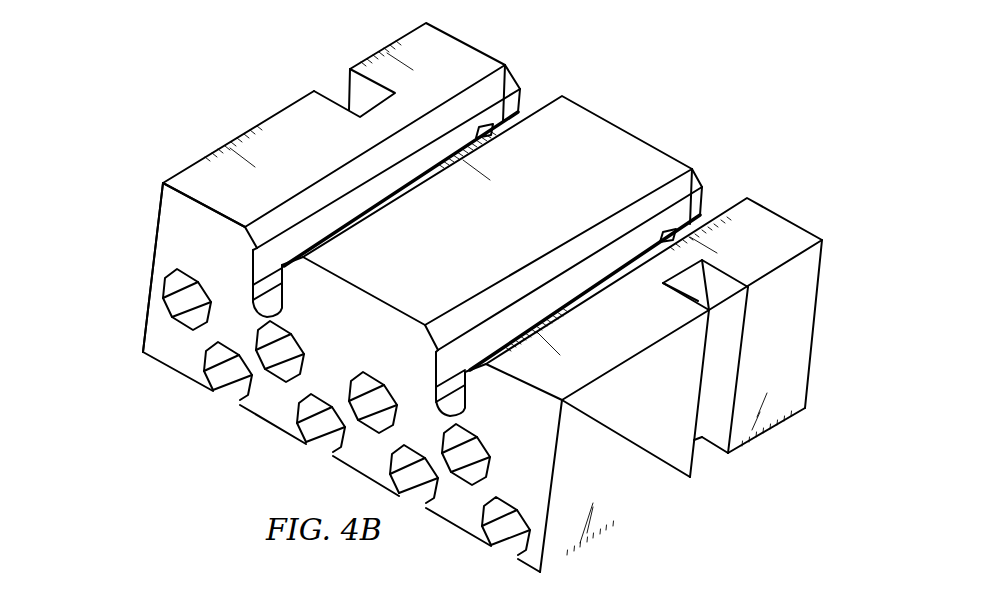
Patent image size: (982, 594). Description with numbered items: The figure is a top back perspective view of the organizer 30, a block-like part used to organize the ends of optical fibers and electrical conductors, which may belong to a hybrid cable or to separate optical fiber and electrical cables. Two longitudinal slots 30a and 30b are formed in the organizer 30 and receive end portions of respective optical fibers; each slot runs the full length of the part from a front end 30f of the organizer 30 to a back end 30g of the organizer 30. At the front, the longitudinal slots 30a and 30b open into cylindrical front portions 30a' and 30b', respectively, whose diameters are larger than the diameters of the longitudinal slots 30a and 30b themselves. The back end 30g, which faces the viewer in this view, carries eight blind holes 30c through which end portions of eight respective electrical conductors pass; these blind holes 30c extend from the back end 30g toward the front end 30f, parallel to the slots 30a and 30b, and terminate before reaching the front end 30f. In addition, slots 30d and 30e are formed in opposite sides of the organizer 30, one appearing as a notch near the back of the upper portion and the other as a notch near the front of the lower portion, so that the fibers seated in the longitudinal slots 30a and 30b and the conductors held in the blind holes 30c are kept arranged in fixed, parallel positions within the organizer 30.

The organizer 30 is at (703, 79).
The longitudinal slot 30a is at (385, 214).
The cylindrical front portion 30a' is at (532, 97).
The longitudinal slot 30b is at (568, 315).
The cylindrical front portion 30b' is at (715, 199).
The blind holes 30c is at (295, 342).
The slot 30d is at (358, 88).
The slot 30e is at (722, 340).
The front end 30f is at (816, 308).
The back end 30g is at (176, 225).